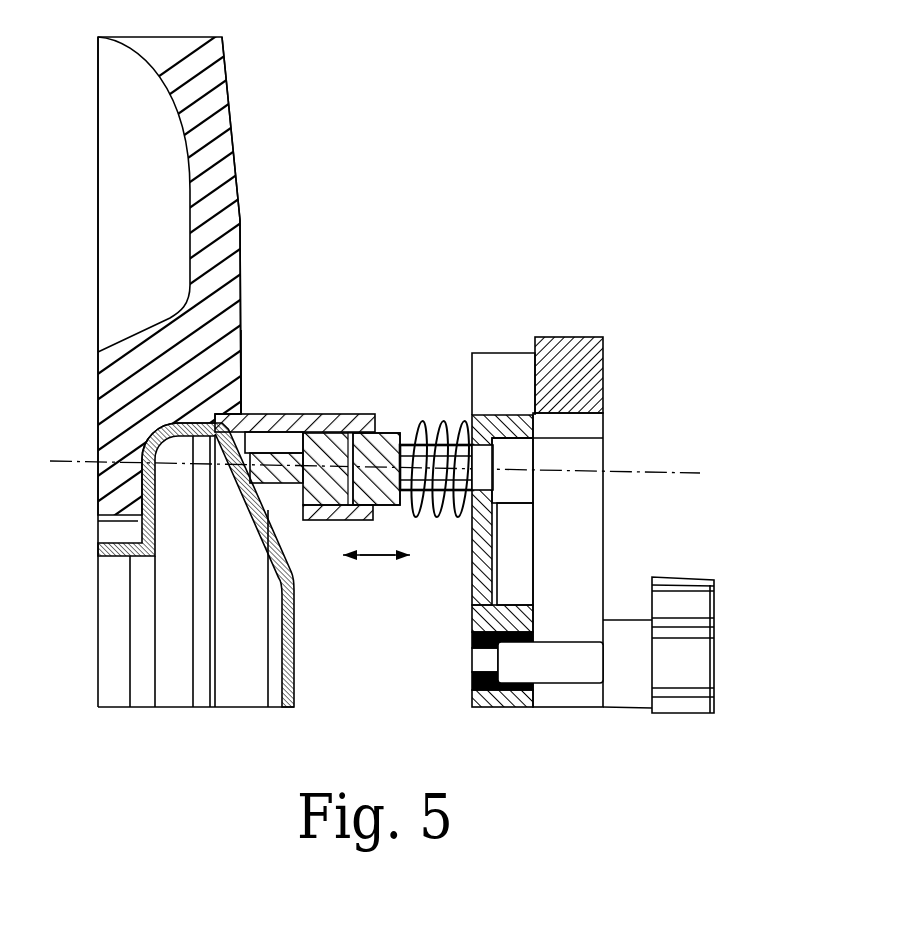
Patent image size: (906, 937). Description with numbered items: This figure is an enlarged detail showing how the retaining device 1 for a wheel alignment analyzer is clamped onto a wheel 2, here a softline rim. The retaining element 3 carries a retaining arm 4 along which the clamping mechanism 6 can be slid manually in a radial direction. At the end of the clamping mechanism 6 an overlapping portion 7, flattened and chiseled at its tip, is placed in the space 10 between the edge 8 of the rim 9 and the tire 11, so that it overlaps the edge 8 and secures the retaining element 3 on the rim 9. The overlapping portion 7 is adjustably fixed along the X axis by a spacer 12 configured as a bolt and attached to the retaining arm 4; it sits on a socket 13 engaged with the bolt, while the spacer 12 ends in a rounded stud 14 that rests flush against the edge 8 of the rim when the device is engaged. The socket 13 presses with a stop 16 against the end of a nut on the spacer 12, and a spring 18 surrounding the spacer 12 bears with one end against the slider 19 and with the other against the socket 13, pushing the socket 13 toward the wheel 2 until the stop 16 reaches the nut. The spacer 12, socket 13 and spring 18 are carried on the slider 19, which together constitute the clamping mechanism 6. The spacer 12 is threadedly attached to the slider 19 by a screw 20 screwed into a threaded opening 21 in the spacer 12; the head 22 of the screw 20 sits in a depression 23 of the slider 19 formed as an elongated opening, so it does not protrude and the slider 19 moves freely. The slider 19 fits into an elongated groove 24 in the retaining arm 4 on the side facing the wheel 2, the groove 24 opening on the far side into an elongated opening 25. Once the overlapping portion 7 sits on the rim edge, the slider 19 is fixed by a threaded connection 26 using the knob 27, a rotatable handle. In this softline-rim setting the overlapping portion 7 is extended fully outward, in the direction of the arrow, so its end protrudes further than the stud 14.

The retaining device 1 is at (655, 415).
The wheel 2 is at (282, 132).
The retaining element 3 is at (580, 325).
The retaining arm 4 is at (603, 352).
The clamping mechanism 6 is at (436, 406).
The overlapping portion 7 is at (243, 412).
The edge of rim 8 is at (270, 510).
The rim 9 is at (295, 697).
The space 10 is at (262, 406).
The tire 11 is at (228, 180).
The spacer 12 is at (355, 412).
The socket 13 is at (321, 528).
The rounded stud 14 is at (240, 488).
The stop 16 is at (372, 507).
The spring 18 is at (455, 412).
The slider 19 is at (533, 605).
The screw 20 is at (480, 458).
The threaded opening 21 is at (395, 412).
The head 22 is at (518, 492).
The depression 23 is at (515, 552).
The elongated groove 24 is at (500, 400).
The elongated opening 25 is at (557, 697).
The threaded connection 26 is at (579, 688).
The knob 27 is at (692, 663).
The X axis X is at (378, 562).